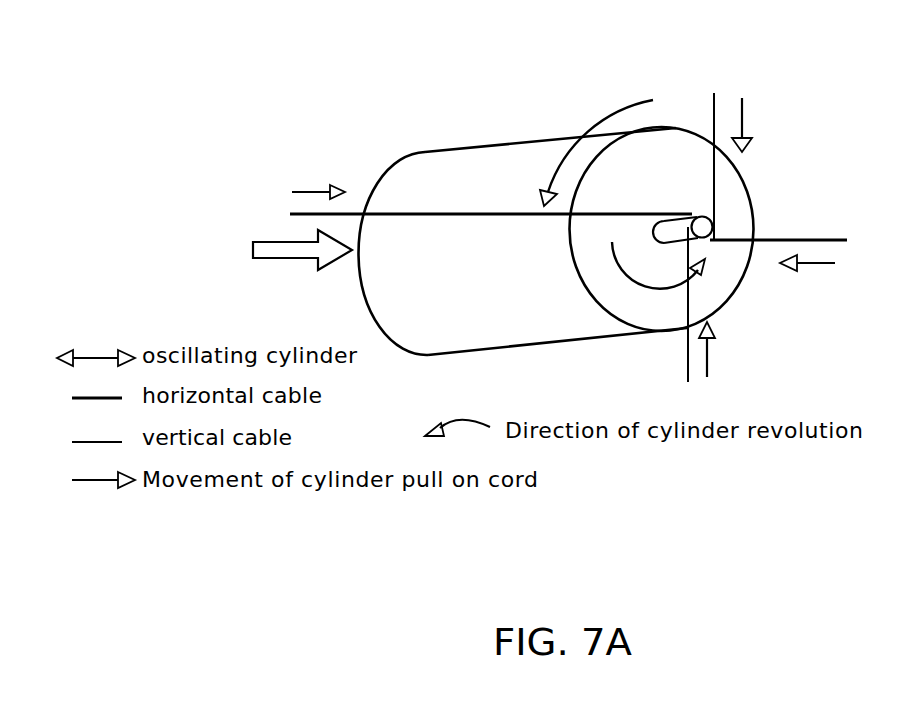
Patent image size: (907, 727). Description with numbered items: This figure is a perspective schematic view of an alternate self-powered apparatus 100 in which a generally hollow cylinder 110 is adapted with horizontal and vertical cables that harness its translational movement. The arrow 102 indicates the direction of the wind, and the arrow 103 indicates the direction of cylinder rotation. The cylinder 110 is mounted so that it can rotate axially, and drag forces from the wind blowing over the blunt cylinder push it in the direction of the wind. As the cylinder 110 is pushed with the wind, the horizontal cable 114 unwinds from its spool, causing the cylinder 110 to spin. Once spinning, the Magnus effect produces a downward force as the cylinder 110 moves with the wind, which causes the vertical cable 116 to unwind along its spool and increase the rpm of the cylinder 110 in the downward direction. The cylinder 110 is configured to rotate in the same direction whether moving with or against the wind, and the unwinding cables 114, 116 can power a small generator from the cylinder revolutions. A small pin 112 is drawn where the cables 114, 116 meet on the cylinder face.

The apparatus 100 is at (457, 98).
The arrow indicating direction of wind 102 is at (280, 260).
The arrow indicating direction of cylinder rotation 103 is at (590, 123).
The cylinder 110 is at (422, 151).
The pin / cord attachment on cylinder face 112 is at (678, 230).
The cable 114 is at (807, 240).
The cable 116 is at (688, 303).